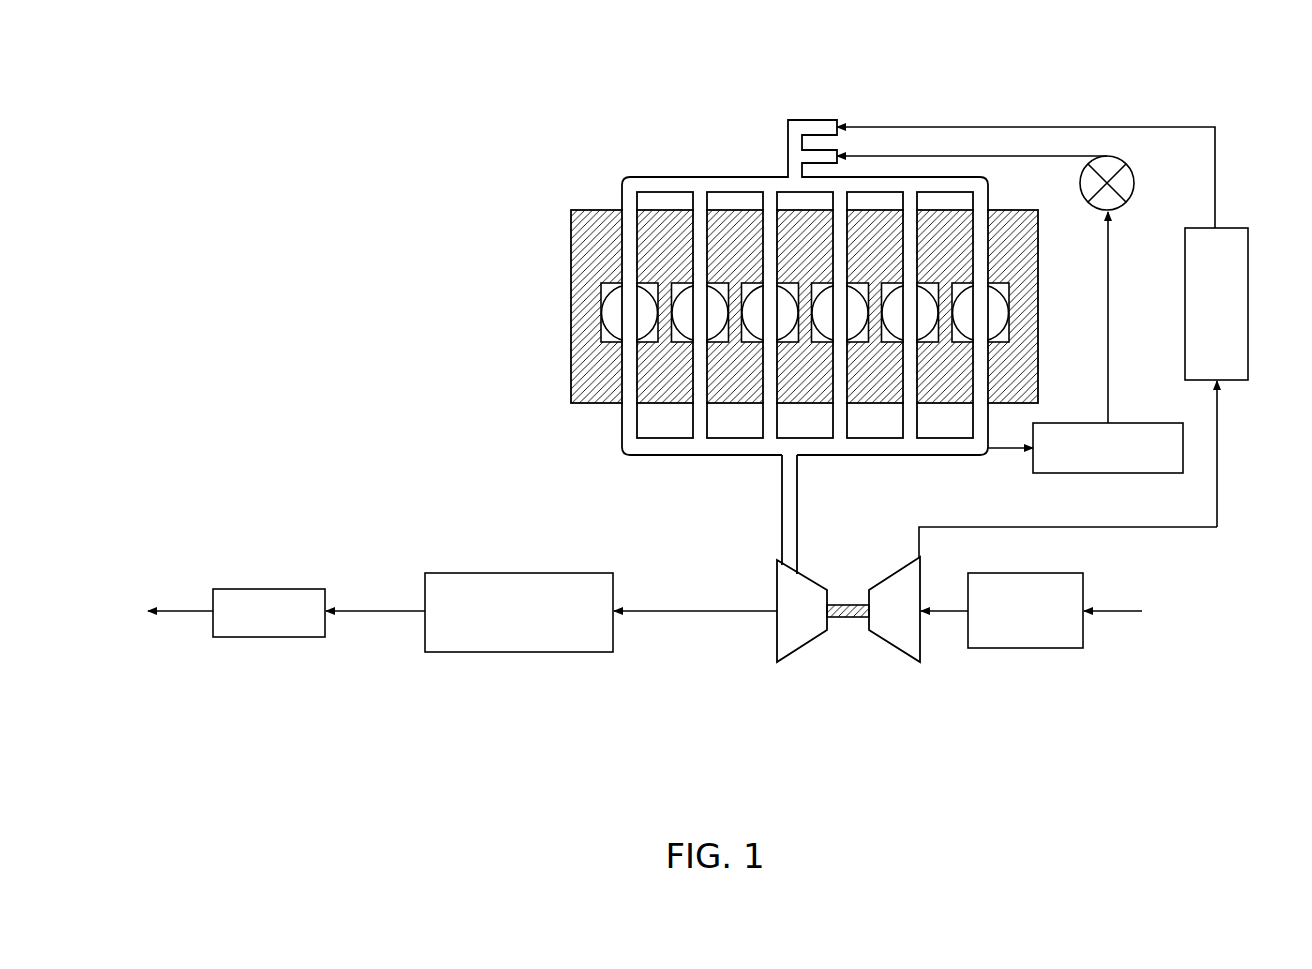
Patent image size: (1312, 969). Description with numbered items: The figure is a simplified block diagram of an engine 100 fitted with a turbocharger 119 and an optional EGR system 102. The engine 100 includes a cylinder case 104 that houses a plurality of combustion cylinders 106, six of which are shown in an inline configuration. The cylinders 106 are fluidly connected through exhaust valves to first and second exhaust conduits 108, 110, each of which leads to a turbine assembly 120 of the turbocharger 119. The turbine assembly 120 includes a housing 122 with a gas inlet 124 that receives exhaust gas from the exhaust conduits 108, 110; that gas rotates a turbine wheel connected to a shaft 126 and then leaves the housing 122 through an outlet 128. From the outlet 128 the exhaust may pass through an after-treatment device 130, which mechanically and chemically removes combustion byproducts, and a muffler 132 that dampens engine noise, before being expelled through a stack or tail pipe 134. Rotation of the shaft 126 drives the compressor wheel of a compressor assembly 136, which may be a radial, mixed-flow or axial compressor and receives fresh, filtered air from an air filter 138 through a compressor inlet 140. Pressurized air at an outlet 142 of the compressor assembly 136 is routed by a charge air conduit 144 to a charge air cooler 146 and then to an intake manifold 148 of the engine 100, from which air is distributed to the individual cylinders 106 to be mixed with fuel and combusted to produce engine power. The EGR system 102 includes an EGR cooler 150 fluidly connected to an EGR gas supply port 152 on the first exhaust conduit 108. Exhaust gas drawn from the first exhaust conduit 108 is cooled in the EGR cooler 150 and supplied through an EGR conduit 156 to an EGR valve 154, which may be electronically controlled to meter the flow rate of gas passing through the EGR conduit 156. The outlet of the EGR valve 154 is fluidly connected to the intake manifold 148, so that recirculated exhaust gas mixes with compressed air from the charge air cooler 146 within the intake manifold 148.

The engine 100 is at (1160, 100).
The EGR system 102 is at (1190, 510).
The cylinder case 104 is at (577, 224).
The combustion cylinders 106 is at (620, 322).
The first exhaust conduit 108 is at (888, 457).
The second exhaust conduit 110 is at (680, 457).
The turbocharger 119 is at (852, 710).
The turbine assembly 120 is at (804, 656).
The housing 122 is at (827, 590).
The gas inlet 124 is at (782, 573).
The shaft 126 is at (838, 618).
The outlet 128 is at (775, 612).
The after-treatment device 130 is at (517, 654).
The muffler 132 is at (268, 639).
The tail pipe 134 is at (187, 617).
The compressor assembly 136 is at (893, 656).
The air filter 138 is at (1055, 650).
The compressor inlet 140 is at (921, 612).
The outlet 142 is at (897, 575).
The charge air conduit 144 is at (1220, 442).
The charge air cooler 146 is at (1238, 255).
The intake manifold 148 is at (813, 123).
The EGR cooler 150 is at (1052, 475).
The EGR gas supply port 152 is at (983, 457).
The EGR valve 154 is at (1126, 198).
The EGR conduit 156 is at (1110, 355).